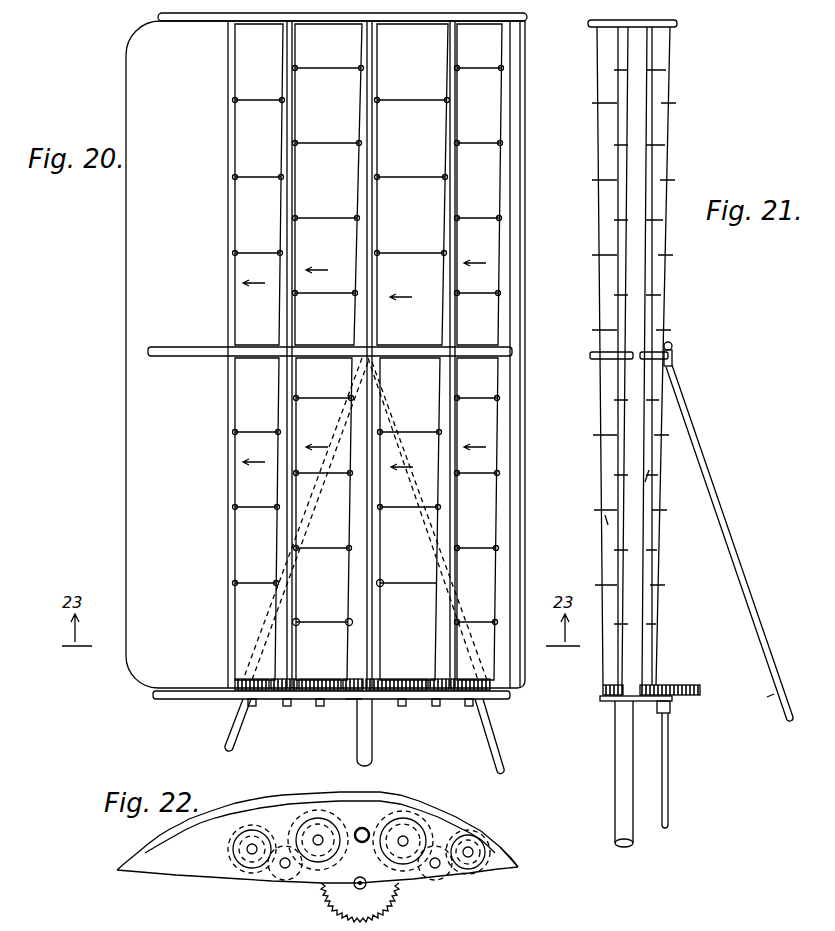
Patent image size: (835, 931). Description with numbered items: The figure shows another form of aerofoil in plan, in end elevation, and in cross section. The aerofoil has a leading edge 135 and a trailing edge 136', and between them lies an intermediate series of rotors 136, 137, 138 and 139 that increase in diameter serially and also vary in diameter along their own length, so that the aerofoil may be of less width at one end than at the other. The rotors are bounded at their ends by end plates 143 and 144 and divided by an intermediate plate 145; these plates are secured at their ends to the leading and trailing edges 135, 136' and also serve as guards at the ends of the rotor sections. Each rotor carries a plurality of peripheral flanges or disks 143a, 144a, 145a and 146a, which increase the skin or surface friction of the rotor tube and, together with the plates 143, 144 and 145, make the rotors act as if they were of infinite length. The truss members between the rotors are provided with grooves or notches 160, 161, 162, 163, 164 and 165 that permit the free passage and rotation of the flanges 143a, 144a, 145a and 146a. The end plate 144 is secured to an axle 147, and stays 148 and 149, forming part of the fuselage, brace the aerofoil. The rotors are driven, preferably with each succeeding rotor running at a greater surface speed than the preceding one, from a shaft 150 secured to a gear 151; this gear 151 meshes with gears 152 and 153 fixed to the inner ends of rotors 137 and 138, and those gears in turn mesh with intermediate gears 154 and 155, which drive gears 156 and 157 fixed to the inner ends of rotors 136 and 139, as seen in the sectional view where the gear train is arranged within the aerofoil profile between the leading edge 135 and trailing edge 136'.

In FIG. 20, the leading edge 135 is at (510, 291).
In FIG. 22, the leading edge 135 is at (519, 866).
In FIG. 20, the rotor 136 is at (479, 352).
In FIG. 21, the rotor 136 is at (672, 356).
In FIG. 20, the trailing edge 136' is at (325, 354).
In FIG. 22, the trailing edge 136' is at (307, 831).
In FIG. 20, the rotor 137 is at (412, 352).
In FIG. 21, the rotor 137 is at (603, 452).
In FIG. 20, the rotor 138 is at (328, 352).
In FIG. 20, the rotor 139 is at (259, 352).
In FIG. 20, the end plate 143 is at (396, 20).
In FIG. 21, the end plate 143 is at (672, 24).
In FIG. 20, the peripheral flange 143a is at (476, 480).
In FIG. 21, the peripheral flange 143a is at (650, 483).
In FIG. 20, the end plate 144 is at (200, 690).
In FIG. 21, the end plate 144 is at (606, 701).
In FIG. 22, the end plate 144 is at (214, 875).
In FIG. 20, the peripheral flange 144a is at (406, 514).
In FIG. 21, the peripheral flange 144a is at (605, 520).
In FIG. 20, the intermediate plate 145 is at (514, 351).
In FIG. 21, the intermediate plate 145 is at (590, 355).
In FIG. 20, the peripheral flange 145a is at (328, 545).
In FIG. 20, the peripheral flange 146a is at (237, 512).
In FIG. 20, the axle 147 is at (372, 743).
In FIG. 21, the axle 147 is at (616, 770).
In FIG. 22, the axle 147 is at (362, 828).
In FIG. 20, the stay 148 is at (498, 746).
In FIG. 21, the stay 148 is at (770, 668).
In FIG. 20, the stay 149 is at (232, 734).
In FIG. 21, the stay 149 is at (784, 712).
In FIG. 21, the shaft 150 is at (670, 768).
In FIG. 22, the shaft 150 is at (360, 878).
In FIG. 20, the gear 151 is at (350, 700).
In FIG. 21, the gear 151 is at (676, 685).
In FIG. 22, the gear 151 is at (391, 900).
In FIG. 20, the gear 152 is at (410, 672).
In FIG. 22, the gear 152 is at (412, 815).
In FIG. 20, the gear 153 is at (319, 680).
In FIG. 22, the gear 153 is at (318, 810).
In FIG. 20, the intermediate gear 154 is at (430, 700).
In FIG. 22, the intermediate gear 154 is at (434, 879).
In FIG. 20, the intermediate gear 155 is at (300, 700).
In FIG. 22, the intermediate gear 155 is at (282, 880).
In FIG. 20, the gear 156 is at (490, 687).
In FIG. 22, the gear 156 is at (479, 841).
In FIG. 20, the gear 157 is at (243, 682).
In FIG. 22, the gear 157 is at (252, 826).
In FIG. 20, the notch 160 is at (456, 553).
In FIG. 20, the notch 161 is at (435, 584).
In FIG. 20, the notch 162 is at (383, 588).
In FIG. 20, the notch 163 is at (346, 619).
In FIG. 20, the notch 164 is at (297, 625).
In FIG. 20, the notch 165 is at (276, 580).